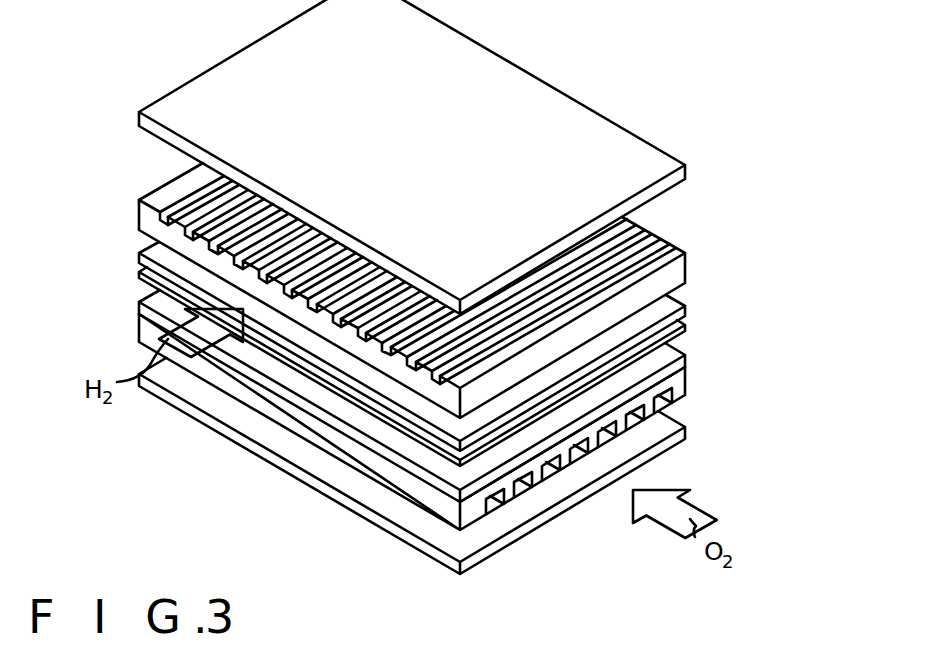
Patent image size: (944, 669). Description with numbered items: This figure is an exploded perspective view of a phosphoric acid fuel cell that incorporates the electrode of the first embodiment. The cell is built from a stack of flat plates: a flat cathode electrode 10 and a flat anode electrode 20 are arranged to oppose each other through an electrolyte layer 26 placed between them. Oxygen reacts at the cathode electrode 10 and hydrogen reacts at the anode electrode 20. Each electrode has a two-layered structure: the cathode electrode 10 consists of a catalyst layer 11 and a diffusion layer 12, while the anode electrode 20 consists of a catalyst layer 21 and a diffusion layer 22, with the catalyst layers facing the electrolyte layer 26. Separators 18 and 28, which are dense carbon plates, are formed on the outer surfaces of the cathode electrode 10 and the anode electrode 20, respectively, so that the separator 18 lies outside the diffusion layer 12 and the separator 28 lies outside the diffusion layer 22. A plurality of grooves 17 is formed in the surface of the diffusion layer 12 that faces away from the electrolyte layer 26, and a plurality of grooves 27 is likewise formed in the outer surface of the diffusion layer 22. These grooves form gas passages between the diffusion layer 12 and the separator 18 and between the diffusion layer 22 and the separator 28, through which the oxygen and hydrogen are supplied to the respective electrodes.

The separator 28 is at (668, 158).
The grooves 27 is at (640, 230).
The diffusion layer 22 is at (678, 270).
The catalyst layer 21 is at (732, 228).
The anode electrode 20 is at (469, 307).
The electrolyte layer 26 is at (682, 323).
The catalyst layer 11 is at (688, 360).
The diffusion layer 12 is at (687, 385).
The cathode electrode 10 is at (473, 410).
The grooves 17 is at (650, 404).
The separator 18 is at (687, 435).